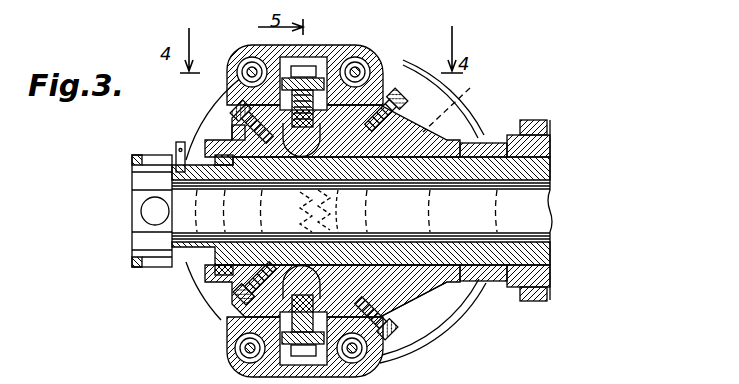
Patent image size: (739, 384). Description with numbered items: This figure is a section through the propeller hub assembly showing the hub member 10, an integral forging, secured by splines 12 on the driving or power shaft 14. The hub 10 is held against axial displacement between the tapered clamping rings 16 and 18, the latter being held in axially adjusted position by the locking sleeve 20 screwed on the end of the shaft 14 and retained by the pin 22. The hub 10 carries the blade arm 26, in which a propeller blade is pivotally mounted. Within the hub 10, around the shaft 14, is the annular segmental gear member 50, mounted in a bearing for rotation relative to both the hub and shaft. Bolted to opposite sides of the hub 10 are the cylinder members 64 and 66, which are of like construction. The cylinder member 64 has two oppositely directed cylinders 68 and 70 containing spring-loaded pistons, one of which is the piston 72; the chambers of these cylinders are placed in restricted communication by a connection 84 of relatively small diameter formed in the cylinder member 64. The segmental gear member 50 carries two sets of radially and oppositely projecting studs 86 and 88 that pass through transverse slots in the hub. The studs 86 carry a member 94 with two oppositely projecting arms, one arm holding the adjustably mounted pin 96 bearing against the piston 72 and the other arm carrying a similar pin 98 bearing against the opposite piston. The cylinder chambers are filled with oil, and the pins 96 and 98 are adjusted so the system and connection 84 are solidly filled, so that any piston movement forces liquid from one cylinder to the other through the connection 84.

The hub member 10 is at (455, 316).
The splines 12 is at (462, 96).
The driving or power shaft 14 is at (550, 171).
The tapered clamping ring 16 is at (435, 303).
The tapered clamping ring 18 is at (228, 282).
The locking sleeve 20 is at (172, 270).
The pin 22 is at (180, 146).
The blade arm 26 is at (217, 112).
The annular segmental gear member 50 is at (292, 258).
The cylinder member 64 is at (260, 36).
The cylinder member 66 is at (355, 377).
The cylinder 68 is at (353, 55).
The cylinder 70 is at (240, 57).
The piston 72 is at (367, 67).
The connection 84 is at (307, 53).
The studs 86 is at (232, 125).
The studs 88 is at (238, 300).
The member 94 is at (323, 62).
The adjustably mounted pin 96 is at (398, 88).
The pin 98 is at (262, 70).